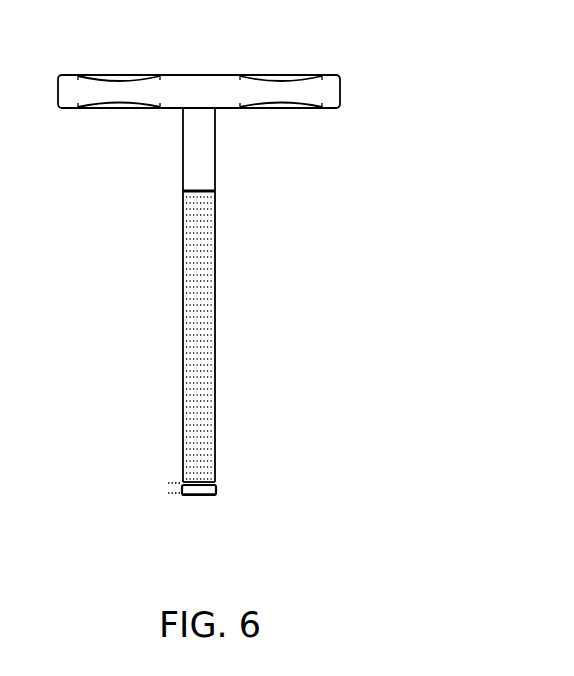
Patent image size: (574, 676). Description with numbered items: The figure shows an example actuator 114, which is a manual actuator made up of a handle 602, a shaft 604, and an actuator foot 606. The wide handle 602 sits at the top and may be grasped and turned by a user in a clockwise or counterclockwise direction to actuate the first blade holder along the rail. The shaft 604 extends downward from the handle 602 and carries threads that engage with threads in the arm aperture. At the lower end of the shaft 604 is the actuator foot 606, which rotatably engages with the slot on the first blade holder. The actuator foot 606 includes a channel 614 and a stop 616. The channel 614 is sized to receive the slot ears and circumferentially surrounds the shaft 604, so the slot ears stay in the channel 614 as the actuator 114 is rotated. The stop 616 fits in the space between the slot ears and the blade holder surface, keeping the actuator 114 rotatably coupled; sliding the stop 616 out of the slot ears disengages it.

The actuator 114 is at (376, 44).
The handle 602 is at (185, 95).
The shaft 604 is at (181, 298).
The actuator foot 606 is at (172, 512).
The channel 614 is at (218, 487).
The stop 616 is at (195, 497).